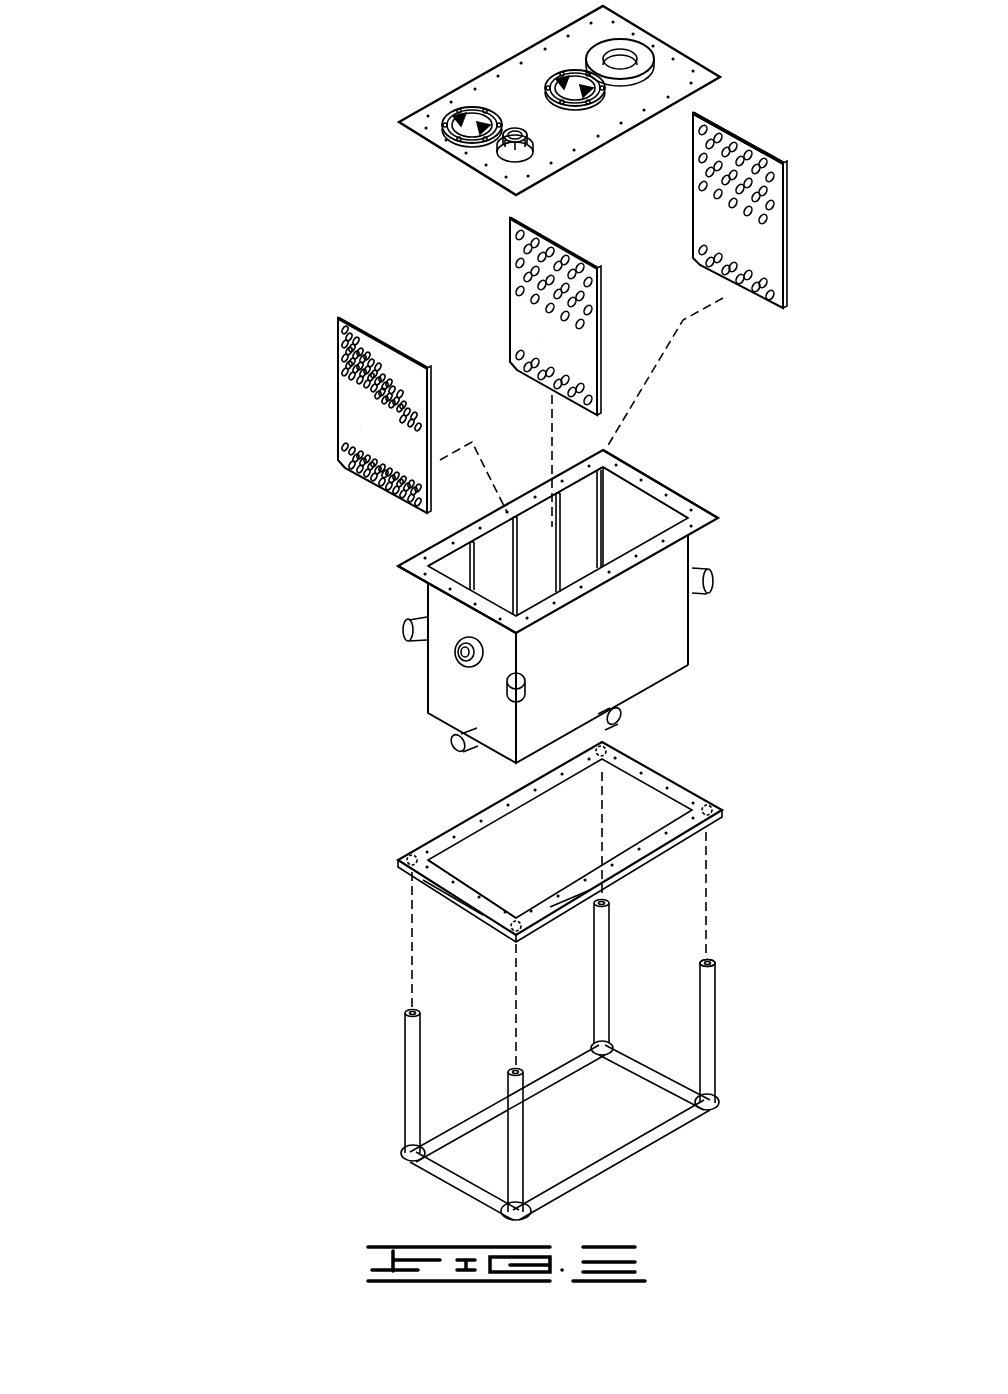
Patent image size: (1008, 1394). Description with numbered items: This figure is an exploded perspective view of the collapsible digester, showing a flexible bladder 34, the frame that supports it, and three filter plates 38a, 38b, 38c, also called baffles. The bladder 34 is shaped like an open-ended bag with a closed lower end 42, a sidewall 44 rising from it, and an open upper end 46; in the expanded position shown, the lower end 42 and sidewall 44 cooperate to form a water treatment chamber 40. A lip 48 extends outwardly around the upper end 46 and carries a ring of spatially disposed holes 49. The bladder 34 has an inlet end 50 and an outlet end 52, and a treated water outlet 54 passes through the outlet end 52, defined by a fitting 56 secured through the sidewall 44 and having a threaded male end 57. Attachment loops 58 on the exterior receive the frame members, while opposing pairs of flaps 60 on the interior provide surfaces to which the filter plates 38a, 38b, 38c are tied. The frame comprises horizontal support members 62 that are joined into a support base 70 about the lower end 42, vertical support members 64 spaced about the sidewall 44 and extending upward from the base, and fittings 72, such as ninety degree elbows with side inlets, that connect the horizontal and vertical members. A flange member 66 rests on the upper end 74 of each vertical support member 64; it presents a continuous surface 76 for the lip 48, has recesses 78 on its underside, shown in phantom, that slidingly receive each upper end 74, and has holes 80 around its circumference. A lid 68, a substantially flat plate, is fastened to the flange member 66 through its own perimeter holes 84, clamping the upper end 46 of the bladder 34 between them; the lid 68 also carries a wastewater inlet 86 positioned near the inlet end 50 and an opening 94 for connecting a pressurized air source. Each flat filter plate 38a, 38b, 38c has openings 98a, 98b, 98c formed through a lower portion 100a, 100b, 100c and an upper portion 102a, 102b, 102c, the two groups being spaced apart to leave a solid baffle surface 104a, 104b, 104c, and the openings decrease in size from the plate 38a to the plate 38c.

The flexible bladder 34 is at (570, 530).
The filter plate 38a is at (747, 224).
The filter plate 38b is at (538, 316).
The filter plate 38c is at (362, 417).
The water treatment chamber 40 is at (638, 505).
The closed lower end 42 is at (653, 687).
The sidewall 44 is at (443, 562).
The open upper end 46 is at (665, 508).
The lip 48 is at (707, 513).
The holes 49 is at (587, 583).
The inlet end 50 is at (630, 463).
The outlet end 52 is at (410, 578).
The treated water outlet 54 is at (507, 684).
The fitting 56 is at (458, 652).
The threaded male end 57 is at (470, 661).
The attachment loops 58 is at (713, 580).
The flaps 60 is at (520, 537).
The horizontal support members 62 is at (584, 1132).
The vertical support members 64 is at (708, 1037).
The flange member 66 is at (587, 842).
The lid 68 is at (692, 57).
The support base 70 is at (483, 1200).
The fittings 72 is at (715, 1110).
The upper end 74 is at (708, 963).
The continuous surface 76 is at (597, 868).
The recesses 78 is at (713, 827).
The holes 80 is at (555, 895).
The holes 84 is at (480, 87).
The wastewater inlet 86 is at (631, 50).
The opening 94 is at (520, 128).
The openings 98a is at (725, 136).
The openings 98b is at (584, 278).
The openings 98c is at (343, 448).
The lower portion 100a is at (758, 306).
The lower portion 100b is at (528, 386).
The lower portion 100c is at (367, 488).
The upper portion 102a is at (767, 153).
The upper portion 102b is at (572, 253).
The upper portion 102c is at (395, 348).
The baffle surface 104a is at (705, 207).
The baffle surface 104b is at (520, 311).
The baffle surface 104c is at (345, 419).